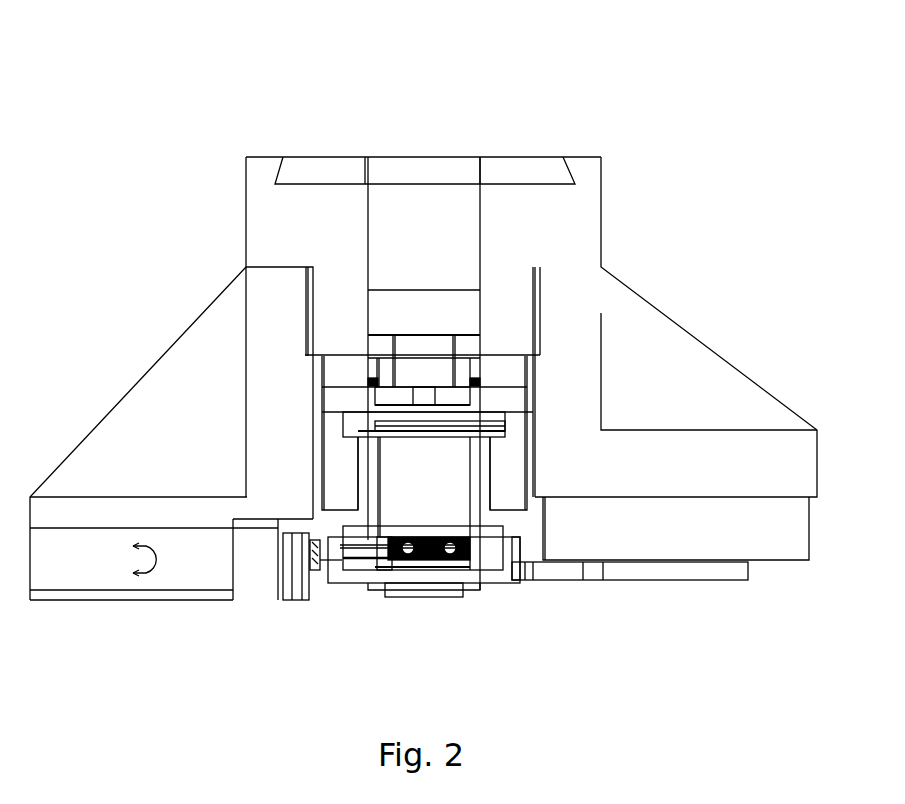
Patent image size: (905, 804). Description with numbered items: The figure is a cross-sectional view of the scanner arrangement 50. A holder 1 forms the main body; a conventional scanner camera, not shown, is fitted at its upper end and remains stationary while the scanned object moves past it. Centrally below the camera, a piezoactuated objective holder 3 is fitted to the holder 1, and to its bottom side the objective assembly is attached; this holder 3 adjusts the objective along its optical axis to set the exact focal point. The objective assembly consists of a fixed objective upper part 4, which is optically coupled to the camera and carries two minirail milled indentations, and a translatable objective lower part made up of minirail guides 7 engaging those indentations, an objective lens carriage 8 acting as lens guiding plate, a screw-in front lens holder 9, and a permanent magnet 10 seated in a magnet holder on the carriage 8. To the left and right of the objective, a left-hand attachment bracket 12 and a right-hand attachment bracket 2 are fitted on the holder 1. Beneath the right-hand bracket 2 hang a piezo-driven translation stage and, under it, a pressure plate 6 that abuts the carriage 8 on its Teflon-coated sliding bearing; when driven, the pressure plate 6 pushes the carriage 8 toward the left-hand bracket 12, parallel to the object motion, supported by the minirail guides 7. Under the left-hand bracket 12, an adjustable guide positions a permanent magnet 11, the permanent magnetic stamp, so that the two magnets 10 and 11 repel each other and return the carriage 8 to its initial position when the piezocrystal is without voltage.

The scanner arrangement 50 is at (585, 135).
The holder 1 is at (586, 167).
The right-hand attachment bracket 2 is at (638, 310).
The piezoactuated objective holder 3 is at (510, 366).
The objective upper part 4 is at (453, 447).
The pressure plate 6 is at (706, 573).
The minirail guides 7 is at (408, 583).
The objective lens carriage 8 is at (512, 580).
The front lens holder 9 is at (437, 597).
The permanent magnet 10 is at (320, 570).
The permanent magnet 11 is at (292, 600).
The left-hand attachment bracket 12 is at (228, 360).